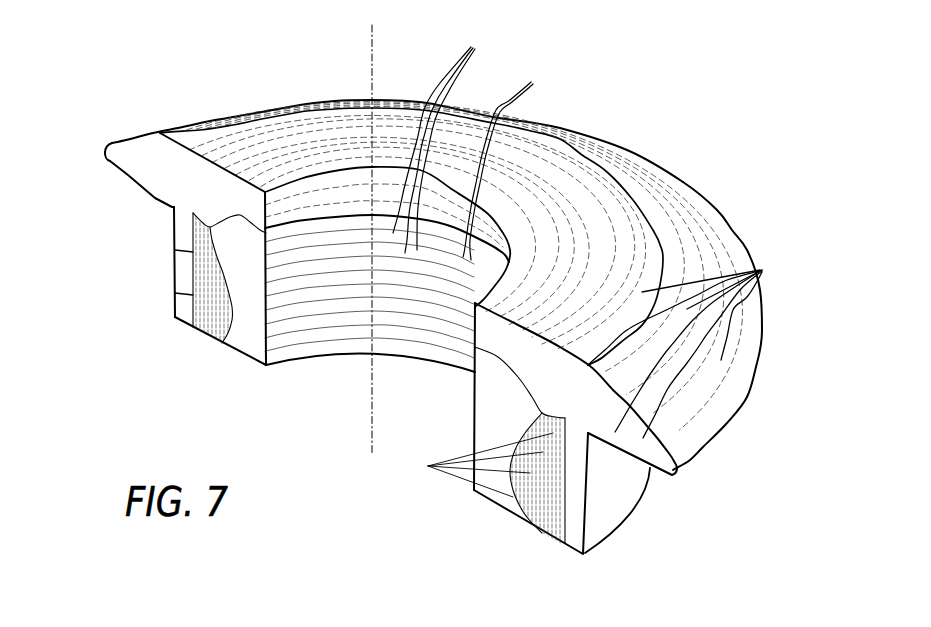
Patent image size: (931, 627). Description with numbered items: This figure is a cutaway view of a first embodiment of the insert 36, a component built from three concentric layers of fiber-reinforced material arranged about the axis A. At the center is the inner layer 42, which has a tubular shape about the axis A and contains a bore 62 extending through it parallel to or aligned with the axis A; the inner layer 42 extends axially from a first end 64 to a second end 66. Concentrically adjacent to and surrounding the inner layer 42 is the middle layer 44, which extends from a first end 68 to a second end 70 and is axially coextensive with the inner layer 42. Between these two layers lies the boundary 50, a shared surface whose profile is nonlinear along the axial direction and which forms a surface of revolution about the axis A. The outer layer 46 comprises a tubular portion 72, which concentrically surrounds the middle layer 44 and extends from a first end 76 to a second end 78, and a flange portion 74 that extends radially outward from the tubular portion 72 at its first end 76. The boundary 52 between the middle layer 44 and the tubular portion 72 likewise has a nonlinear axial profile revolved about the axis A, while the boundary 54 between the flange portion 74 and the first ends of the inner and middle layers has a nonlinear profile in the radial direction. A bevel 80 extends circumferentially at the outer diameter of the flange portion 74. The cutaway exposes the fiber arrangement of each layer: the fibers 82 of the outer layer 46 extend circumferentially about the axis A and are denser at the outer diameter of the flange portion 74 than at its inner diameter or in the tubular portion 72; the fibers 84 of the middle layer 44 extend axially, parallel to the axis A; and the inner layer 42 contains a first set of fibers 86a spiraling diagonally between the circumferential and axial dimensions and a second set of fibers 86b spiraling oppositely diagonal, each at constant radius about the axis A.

The insert 36 is at (673, 83).
The inner layer 42 is at (490, 500).
The middle layer 44 is at (543, 527).
The outer layer 46 is at (598, 545).
The boundary 50 is at (177, 252).
The boundary 52 is at (177, 293).
The boundary 54 is at (474, 395).
The bore 62 is at (270, 340).
The first end 64 is at (307, 212).
The second end 66 is at (348, 354).
The first end 68 is at (193, 212).
The second end 70 is at (207, 337).
The tubular portion 72 is at (641, 508).
The flange portion 74 is at (710, 444).
The first end 76 is at (172, 206).
The second end 78 is at (185, 322).
The bevel 80 is at (684, 182).
The fibers 82 is at (760, 271).
The fibers 84 is at (476, 465).
The first set of fibers 86a is at (454, 141).
The second set of fibers 86b is at (515, 164).
The axis A is at (371, 228).